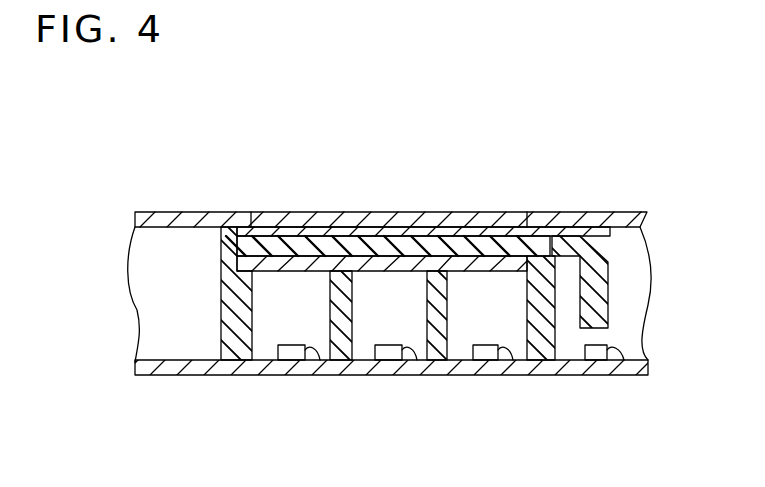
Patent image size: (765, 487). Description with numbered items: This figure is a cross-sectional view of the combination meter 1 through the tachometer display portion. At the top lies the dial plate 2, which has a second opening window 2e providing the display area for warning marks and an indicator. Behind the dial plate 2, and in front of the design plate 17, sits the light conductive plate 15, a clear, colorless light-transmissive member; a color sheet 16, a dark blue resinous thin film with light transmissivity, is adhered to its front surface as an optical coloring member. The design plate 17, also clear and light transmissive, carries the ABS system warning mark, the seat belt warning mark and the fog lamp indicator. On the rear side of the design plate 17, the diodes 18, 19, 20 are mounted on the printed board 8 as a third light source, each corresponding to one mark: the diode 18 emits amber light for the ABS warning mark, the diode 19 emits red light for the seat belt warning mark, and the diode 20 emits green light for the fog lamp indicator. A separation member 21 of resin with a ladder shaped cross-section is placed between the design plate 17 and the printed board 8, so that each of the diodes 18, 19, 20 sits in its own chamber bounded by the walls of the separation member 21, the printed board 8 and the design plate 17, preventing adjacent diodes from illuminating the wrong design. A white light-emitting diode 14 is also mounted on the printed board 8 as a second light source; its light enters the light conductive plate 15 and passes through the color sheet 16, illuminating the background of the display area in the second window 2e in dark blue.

The combination meter 1 is at (68, 91).
The dial plate 2 is at (192, 206).
The second opening window 2e is at (252, 221).
The printed board 8 is at (175, 362).
The light-emitting diode 14 is at (607, 355).
The light conductive plate 15 is at (612, 305).
The color sheet 16 is at (498, 228).
The design plate 17 is at (285, 273).
The diode 18 is at (320, 360).
The diode 19 is at (412, 360).
The diode 20 is at (513, 362).
The separation member 21 is at (556, 338).